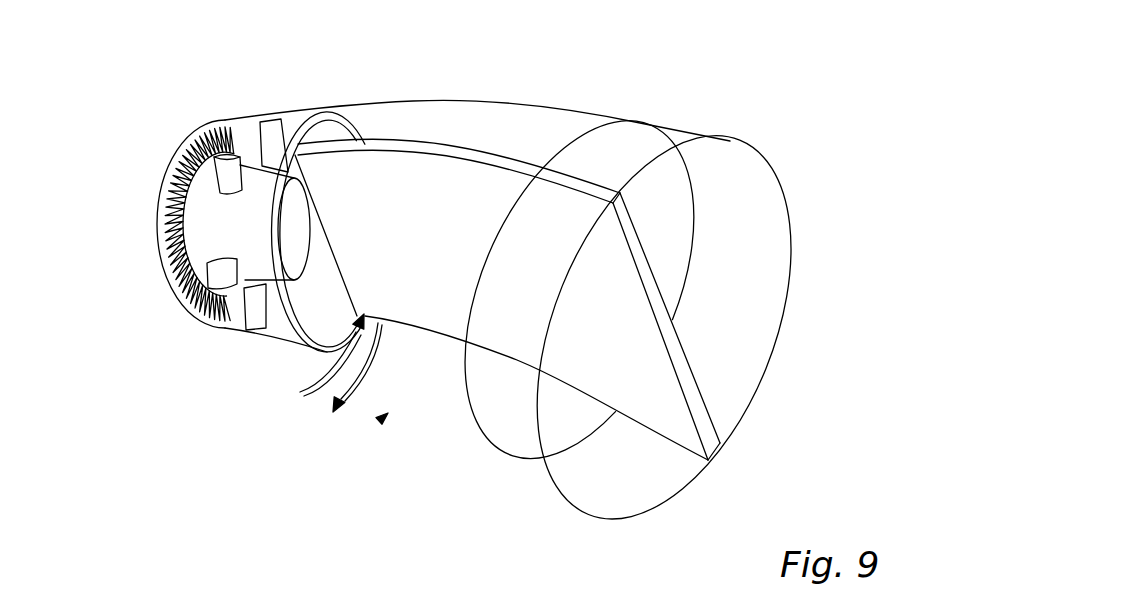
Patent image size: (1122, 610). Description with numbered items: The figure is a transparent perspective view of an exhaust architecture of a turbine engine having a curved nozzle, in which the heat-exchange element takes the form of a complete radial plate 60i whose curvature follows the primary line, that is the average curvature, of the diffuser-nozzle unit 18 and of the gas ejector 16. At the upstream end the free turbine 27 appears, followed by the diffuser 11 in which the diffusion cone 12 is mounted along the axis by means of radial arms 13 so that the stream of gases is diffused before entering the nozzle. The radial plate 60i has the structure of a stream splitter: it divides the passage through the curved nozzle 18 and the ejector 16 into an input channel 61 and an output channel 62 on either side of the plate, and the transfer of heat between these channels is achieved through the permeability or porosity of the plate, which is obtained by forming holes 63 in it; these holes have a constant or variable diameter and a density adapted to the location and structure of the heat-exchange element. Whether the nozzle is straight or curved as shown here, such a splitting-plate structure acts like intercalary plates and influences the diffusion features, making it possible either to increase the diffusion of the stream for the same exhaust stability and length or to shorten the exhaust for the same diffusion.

The diffuser 11 is at (305, 103).
The diffusion cone 12 is at (222, 220).
The radial arms 13 is at (253, 160).
The free turbine 27 is at (232, 177).
The complete radial plate 60i is at (478, 184).
The holes 63 is at (638, 252).
The gas ejector 16 is at (528, 478).
The input channel 61 is at (310, 395).
The output channel 62 is at (332, 396).
The diffuser-nozzle unit 18 is at (388, 413).